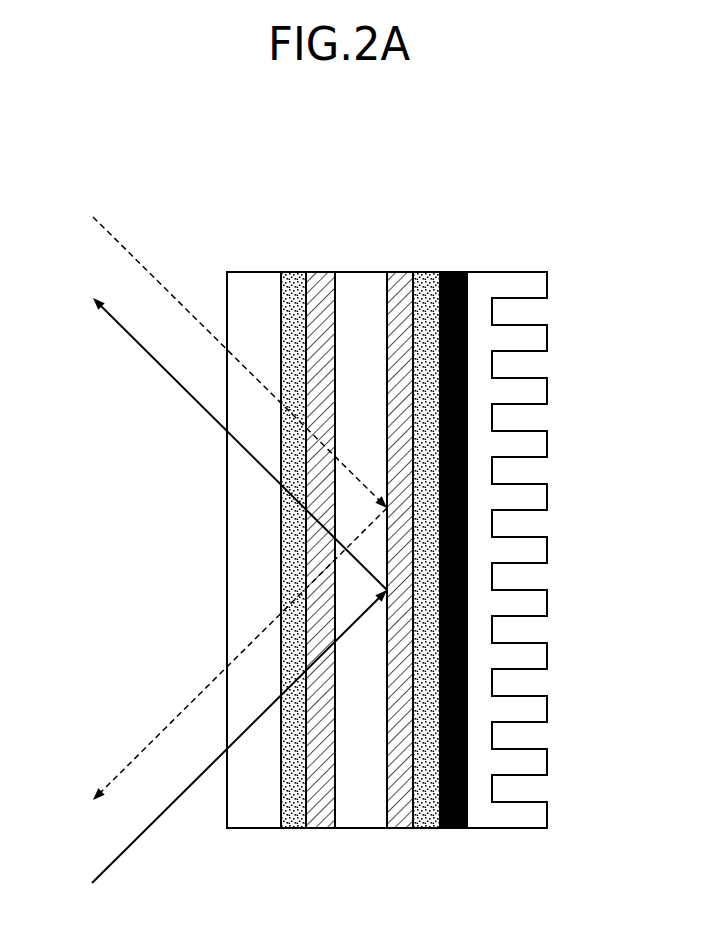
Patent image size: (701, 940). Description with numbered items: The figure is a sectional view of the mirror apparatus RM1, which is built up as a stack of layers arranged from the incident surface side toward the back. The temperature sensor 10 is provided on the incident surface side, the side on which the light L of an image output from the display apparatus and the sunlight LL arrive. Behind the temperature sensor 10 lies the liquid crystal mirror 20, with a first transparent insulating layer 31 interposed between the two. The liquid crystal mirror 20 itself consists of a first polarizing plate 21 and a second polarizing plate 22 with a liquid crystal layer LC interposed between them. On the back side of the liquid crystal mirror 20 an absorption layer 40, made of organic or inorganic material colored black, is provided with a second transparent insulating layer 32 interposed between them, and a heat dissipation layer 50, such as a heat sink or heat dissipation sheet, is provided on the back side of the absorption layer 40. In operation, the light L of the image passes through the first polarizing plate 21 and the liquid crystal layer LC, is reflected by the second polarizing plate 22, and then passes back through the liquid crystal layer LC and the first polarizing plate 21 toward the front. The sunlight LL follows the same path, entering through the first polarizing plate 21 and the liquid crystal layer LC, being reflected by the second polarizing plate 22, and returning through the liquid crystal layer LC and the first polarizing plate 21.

The mirror apparatus RM1 is at (540, 177).
The temperature sensor 10 is at (252, 272).
The first transparent insulating layer 31 is at (290, 272).
The liquid crystal mirror 20 is at (413, 203).
The first polarizing plate 21 is at (317, 272).
The liquid crystal layer LC is at (357, 272).
The second polarizing plate 22 is at (398, 272).
The second transparent insulating layer 32 is at (425, 272).
The absorption layer 40 is at (452, 272).
The heat dissipation layer 50 is at (502, 272).
The sunlight LL is at (223, 500).
The light of an image L is at (230, 600).